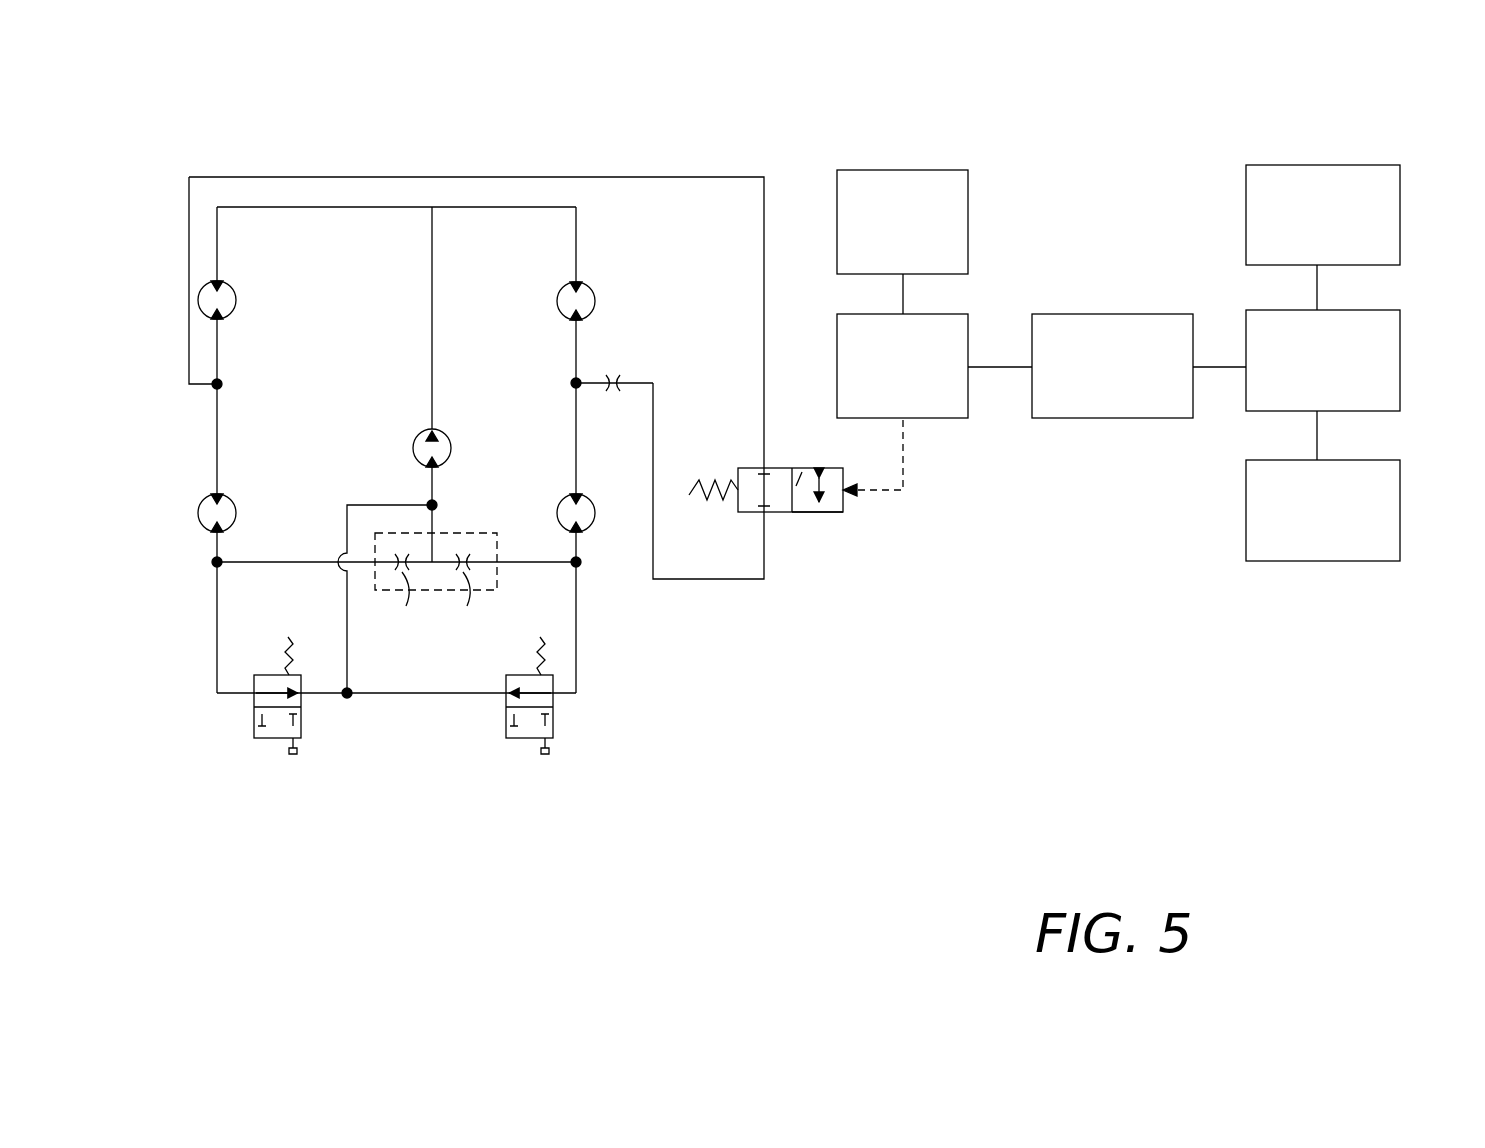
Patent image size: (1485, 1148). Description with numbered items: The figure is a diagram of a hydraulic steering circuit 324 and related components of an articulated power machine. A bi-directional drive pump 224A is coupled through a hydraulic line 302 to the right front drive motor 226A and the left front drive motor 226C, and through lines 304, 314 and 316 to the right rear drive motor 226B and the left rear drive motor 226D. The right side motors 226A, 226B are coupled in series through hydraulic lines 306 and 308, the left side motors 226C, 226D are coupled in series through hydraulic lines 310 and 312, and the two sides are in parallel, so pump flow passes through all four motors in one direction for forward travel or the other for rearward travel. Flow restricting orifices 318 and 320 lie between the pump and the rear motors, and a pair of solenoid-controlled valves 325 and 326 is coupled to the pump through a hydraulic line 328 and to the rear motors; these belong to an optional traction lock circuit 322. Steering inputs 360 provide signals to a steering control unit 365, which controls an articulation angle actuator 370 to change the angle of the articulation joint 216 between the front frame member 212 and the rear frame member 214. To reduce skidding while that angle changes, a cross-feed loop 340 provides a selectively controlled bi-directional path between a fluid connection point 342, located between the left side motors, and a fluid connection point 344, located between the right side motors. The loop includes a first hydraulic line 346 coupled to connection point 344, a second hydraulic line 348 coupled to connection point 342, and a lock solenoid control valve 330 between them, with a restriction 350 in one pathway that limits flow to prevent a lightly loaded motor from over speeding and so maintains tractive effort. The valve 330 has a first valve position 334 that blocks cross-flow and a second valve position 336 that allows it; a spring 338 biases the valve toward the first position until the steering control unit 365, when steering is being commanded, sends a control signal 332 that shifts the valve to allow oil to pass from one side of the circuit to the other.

The hydraulic steering circuit 324 is at (278, 133).
The traction lock circuit 322 is at (193, 742).
The second hydraulic line 348 is at (688, 177).
The fluid connection point 342 is at (215, 390).
The left front drive motor 226C is at (237, 300).
The hydraulic line 310 is at (220, 352).
The hydraulic line 312 is at (220, 437).
The left rear drive motor 226D is at (198, 512).
The hydraulic line 314 is at (280, 560).
The hydraulic line 316 is at (538, 560).
The flow restricting orifice 318 is at (436, 588).
The flow restricting orifice 320 is at (464, 598).
The hydraulic line 302 is at (434, 320).
The drive pump 224A is at (447, 434).
The hydraulic line 304 is at (437, 499).
The hydraulic line 328 is at (347, 612).
The right front drive motor 226A is at (586, 296).
The hydraulic line 306 is at (580, 332).
The fluid connection point 344 is at (575, 380).
The hydraulic line 308 is at (575, 445).
The right rear drive motor 226B is at (590, 528).
The restriction 350 is at (615, 376).
The first hydraulic line 346 is at (706, 580).
The cross-feed loop 340 is at (766, 601).
The lock solenoid control valve 330 is at (813, 513).
The first valve position 334 is at (752, 466).
The second valve position 336 is at (800, 484).
The spring 338 is at (707, 498).
The control signal 332 is at (885, 494).
The solenoid-controlled valve 325 is at (274, 762).
The solenoid-controlled valve 326 is at (524, 765).
The steering inputs 360 is at (968, 200).
The steering control unit 365 is at (928, 420).
The articulation angle actuator 370 is at (1118, 420).
The front frame member 212 is at (1246, 237).
The articulation joint 216 is at (1392, 310).
The rear frame member 214 is at (1383, 460).